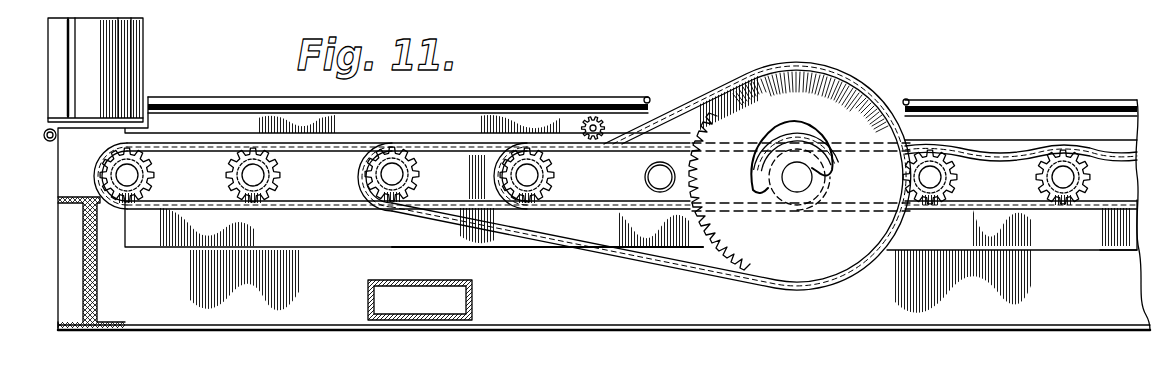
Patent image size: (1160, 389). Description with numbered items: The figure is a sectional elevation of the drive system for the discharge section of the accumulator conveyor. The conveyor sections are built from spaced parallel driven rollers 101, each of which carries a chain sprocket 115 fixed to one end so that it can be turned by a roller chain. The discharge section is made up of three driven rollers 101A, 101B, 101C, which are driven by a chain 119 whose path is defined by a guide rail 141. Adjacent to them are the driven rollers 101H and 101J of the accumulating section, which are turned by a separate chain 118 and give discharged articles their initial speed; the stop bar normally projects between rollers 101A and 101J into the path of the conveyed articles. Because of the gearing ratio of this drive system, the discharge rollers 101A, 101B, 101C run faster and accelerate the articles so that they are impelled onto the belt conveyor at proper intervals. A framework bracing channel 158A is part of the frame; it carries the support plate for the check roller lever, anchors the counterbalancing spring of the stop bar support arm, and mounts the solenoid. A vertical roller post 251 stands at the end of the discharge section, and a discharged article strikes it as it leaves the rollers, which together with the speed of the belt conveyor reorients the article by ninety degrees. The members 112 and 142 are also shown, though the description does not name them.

The vertical roller post 251 is at (120, 33).
The driven roller 101C is at (135, 160).
The driven roller 101B is at (250, 160).
The driven roller 101A is at (398, 160).
The driven roller 101J is at (545, 168).
The driven roller 101H is at (952, 134).
The driven roller 101 is at (1068, 165).
The chain 119 is at (228, 148).
The chain sprocket 115 is at (947, 182).
The guide rail 141 is at (437, 126).
The idler roller 112 is at (645, 172).
The frame plate 142 is at (455, 236).
The framework bracing channel 158A is at (473, 291).
The chain 118 is at (1112, 216).